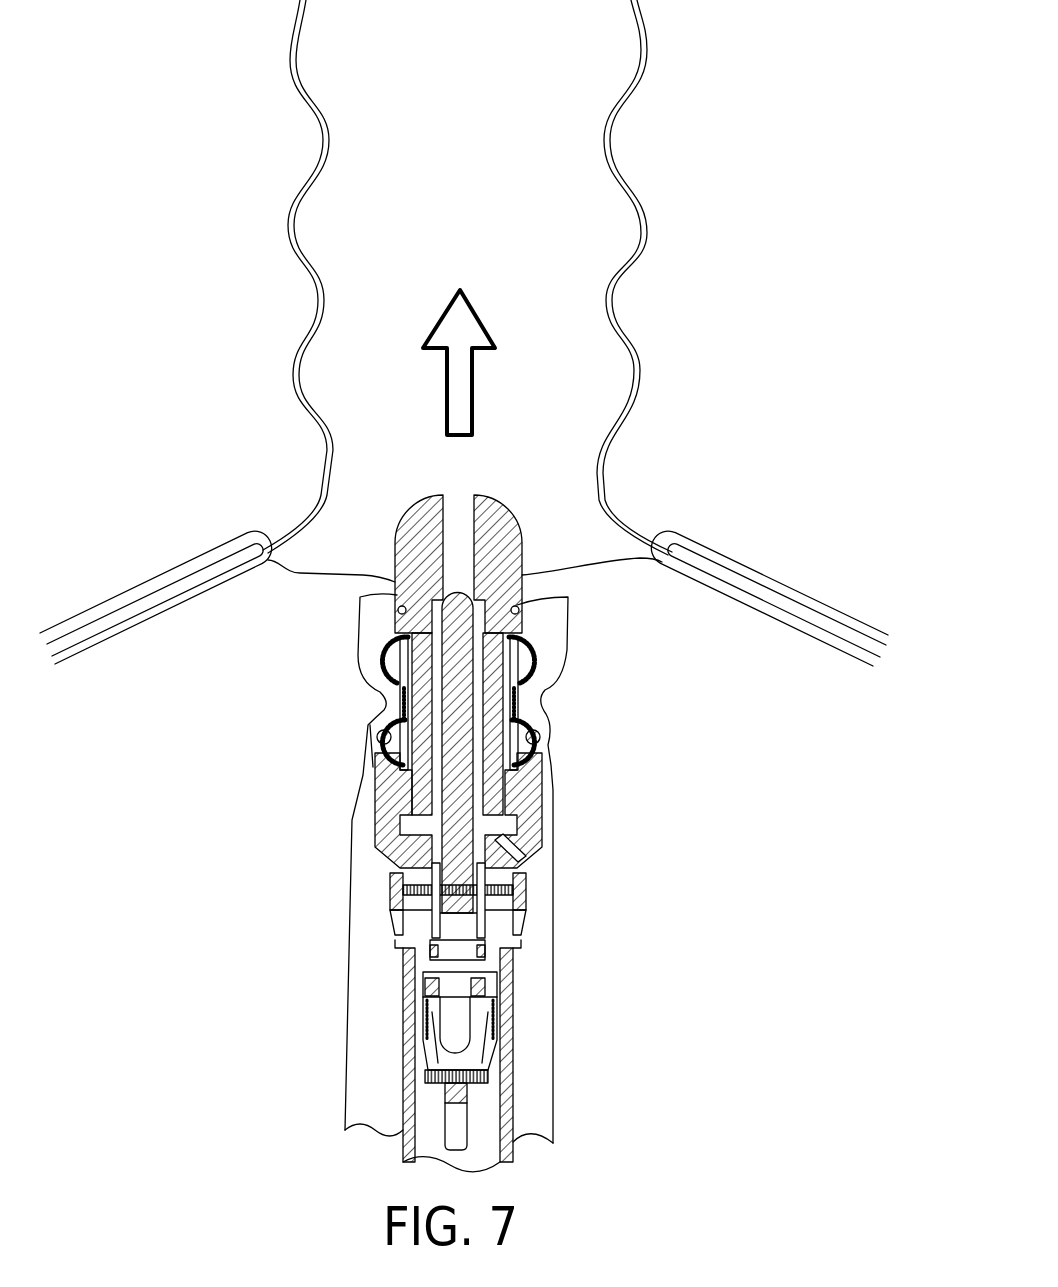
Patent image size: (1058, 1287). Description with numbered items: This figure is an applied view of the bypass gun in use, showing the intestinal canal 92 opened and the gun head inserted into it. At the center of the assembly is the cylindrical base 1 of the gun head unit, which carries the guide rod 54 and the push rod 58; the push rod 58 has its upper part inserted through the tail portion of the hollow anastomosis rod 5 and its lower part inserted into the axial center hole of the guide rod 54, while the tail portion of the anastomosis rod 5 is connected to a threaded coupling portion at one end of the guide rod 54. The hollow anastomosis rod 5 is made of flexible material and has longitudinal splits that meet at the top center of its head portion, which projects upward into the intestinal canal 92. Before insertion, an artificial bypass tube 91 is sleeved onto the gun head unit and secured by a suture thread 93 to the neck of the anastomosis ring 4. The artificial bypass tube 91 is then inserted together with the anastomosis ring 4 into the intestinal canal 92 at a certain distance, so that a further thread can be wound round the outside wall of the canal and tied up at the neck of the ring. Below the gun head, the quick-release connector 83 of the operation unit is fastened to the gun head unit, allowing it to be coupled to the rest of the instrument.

The cylindrical base 1 is at (375, 795).
The anastomosis ring 4 is at (535, 722).
The hollow anastomosis rod 5 is at (500, 663).
The guide rod 54 is at (490, 930).
The push rod 58 is at (467, 750).
The quick-release connector 83 is at (497, 1053).
The artificial bypass tube 91 is at (542, 1006).
The intestinal canal 92 is at (645, 250).
The suture thread 93 is at (527, 705).